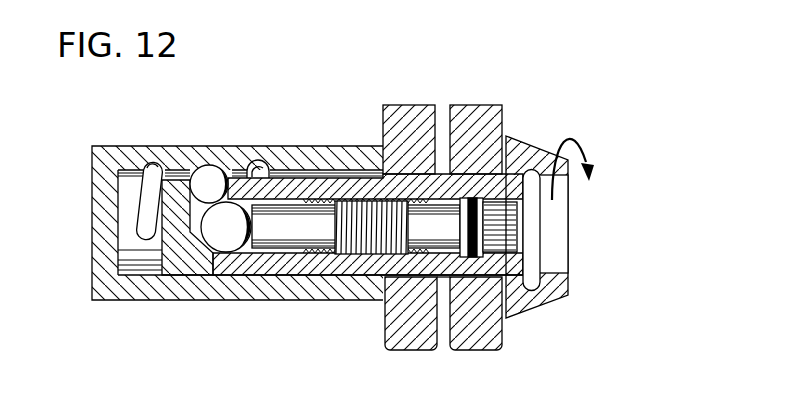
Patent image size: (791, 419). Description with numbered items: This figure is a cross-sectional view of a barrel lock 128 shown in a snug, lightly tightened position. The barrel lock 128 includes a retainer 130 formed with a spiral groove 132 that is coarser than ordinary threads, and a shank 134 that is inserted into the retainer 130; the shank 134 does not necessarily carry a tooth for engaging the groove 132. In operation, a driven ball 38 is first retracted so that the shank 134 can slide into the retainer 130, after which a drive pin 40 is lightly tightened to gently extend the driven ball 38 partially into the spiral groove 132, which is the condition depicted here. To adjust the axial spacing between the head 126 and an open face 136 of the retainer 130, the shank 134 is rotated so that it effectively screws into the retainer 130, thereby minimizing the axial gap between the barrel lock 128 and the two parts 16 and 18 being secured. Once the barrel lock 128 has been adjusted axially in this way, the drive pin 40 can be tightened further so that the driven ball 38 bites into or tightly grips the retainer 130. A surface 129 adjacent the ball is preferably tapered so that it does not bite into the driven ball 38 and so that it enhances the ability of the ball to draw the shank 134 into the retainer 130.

The part 16 is at (385, 333).
The part 18 is at (482, 352).
The driven ball 38 is at (205, 171).
The drive pin 40 is at (272, 225).
The head 126 is at (534, 140).
The barrel lock 128 is at (651, 218).
The surface 129 is at (217, 171).
The retainer 130 is at (295, 176).
The spiral groove 132 is at (183, 146).
The shank 134 is at (331, 177).
The open face 136 is at (386, 288).